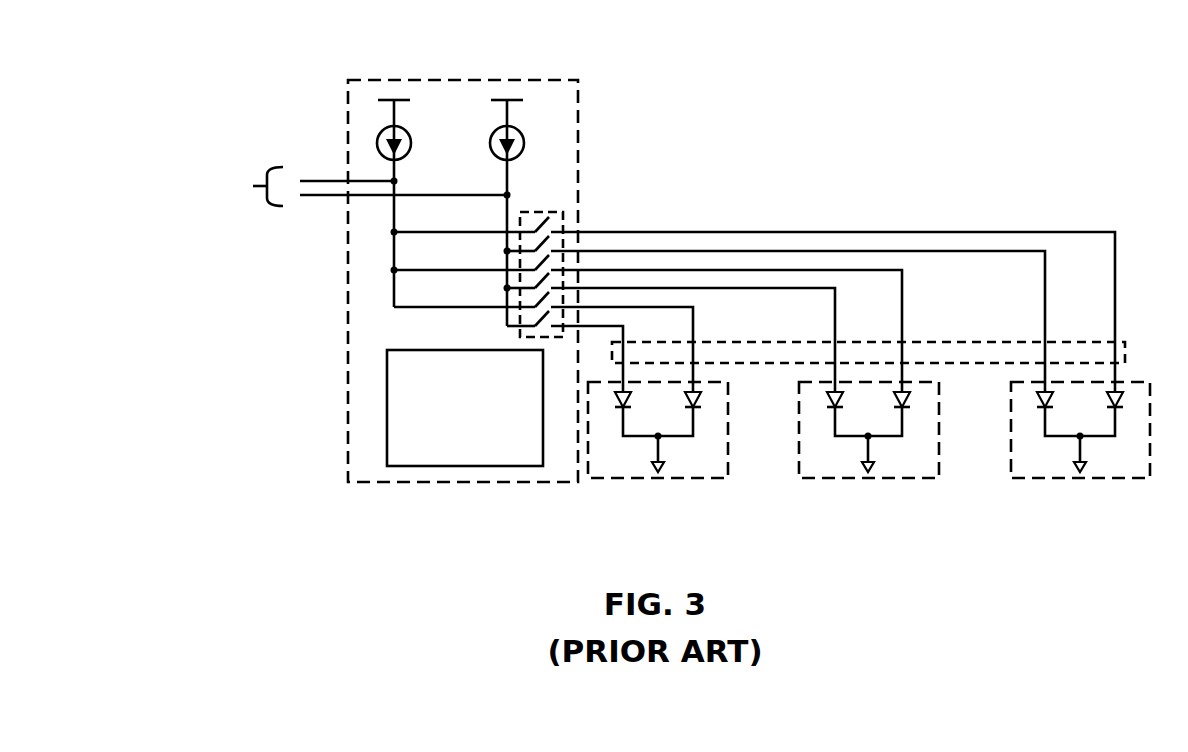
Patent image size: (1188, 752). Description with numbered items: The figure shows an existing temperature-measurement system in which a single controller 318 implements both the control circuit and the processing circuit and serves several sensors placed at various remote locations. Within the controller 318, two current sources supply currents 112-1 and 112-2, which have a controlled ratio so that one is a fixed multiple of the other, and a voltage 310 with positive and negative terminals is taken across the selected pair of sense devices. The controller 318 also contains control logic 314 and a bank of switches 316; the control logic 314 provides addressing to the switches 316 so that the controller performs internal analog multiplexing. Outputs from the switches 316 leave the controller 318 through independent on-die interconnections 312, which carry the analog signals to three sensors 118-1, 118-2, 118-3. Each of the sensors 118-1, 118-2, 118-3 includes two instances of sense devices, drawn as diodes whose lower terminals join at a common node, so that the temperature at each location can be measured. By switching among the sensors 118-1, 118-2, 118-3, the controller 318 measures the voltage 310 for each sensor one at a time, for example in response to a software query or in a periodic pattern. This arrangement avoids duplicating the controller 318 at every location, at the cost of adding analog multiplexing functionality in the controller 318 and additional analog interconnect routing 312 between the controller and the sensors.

The controller 318 is at (462, 77).
The current 112-1 is at (380, 135).
The current 112-2 is at (523, 135).
The voltage 310 is at (338, 186).
The switches 316 is at (563, 220).
The control logic 314 is at (465, 408).
The interconnections 312 is at (962, 342).
The sensor 118-1 is at (635, 480).
The sensor 118-2 is at (845, 480).
The sensor 118-3 is at (1057, 480).